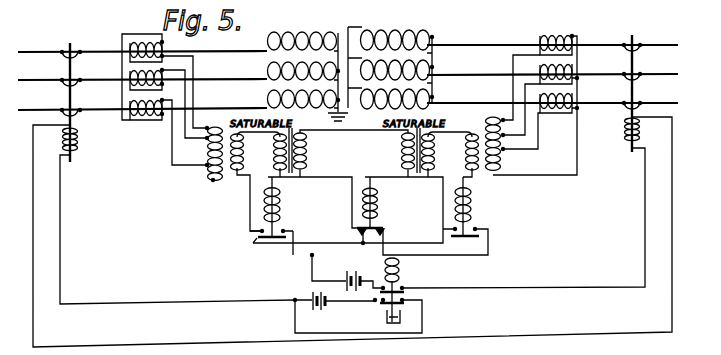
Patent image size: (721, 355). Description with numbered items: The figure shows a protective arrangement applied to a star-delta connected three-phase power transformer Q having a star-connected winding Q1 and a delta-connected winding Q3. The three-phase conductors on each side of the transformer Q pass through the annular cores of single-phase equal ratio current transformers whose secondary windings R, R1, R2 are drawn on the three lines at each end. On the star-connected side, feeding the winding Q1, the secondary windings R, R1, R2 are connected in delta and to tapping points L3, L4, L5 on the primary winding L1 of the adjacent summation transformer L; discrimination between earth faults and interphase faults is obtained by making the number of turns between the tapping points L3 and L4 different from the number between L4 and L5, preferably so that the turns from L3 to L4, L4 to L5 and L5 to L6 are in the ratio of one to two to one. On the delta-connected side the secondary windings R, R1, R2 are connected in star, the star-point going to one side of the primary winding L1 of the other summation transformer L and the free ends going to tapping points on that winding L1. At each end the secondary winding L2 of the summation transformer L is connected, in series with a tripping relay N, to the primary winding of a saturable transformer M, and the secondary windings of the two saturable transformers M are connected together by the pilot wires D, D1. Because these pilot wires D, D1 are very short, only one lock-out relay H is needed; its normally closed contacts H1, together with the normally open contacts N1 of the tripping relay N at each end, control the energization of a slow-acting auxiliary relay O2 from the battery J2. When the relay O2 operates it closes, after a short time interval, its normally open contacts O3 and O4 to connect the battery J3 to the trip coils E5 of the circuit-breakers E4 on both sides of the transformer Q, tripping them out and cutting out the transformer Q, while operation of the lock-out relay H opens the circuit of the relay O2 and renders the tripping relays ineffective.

The circuit-breaker E4 is at (650, 61).
The trip coil E5 is at (627, 147).
The current transformer secondary winding R is at (137, 43).
The current transformer secondary winding R1 is at (590, 62).
The current transformer secondary winding R2 is at (560, 120).
The power transformer Q is at (340, 40).
The star-connected winding Q1 is at (305, 32).
The delta-connected winding Q3 is at (392, 30).
The summation transformer L is at (225, 179).
The summation transformer primary winding L1 is at (506, 162).
The summation transformer secondary winding L2 is at (467, 147).
The tapping point L3 is at (207, 128).
The tapping point L4 is at (207, 138).
The tapping point L5 is at (207, 165).
The tapping point L6 is at (213, 180).
The pilot wire D is at (350, 130).
The pilot wire D1 is at (337, 177).
The saturable transformer M is at (367, 207).
The tripping relay N is at (266, 206).
The tripping relay contacts N1 is at (496, 258).
The lock-out relay H is at (378, 204).
The lock-out relay contacts H1 is at (357, 229).
The battery J2 is at (347, 278).
The battery J3 is at (312, 298).
The slow-acting auxiliary relay O2 is at (398, 268).
The auxiliary relay contacts O3 is at (405, 290).
The auxiliary relay contacts O4 is at (403, 305).